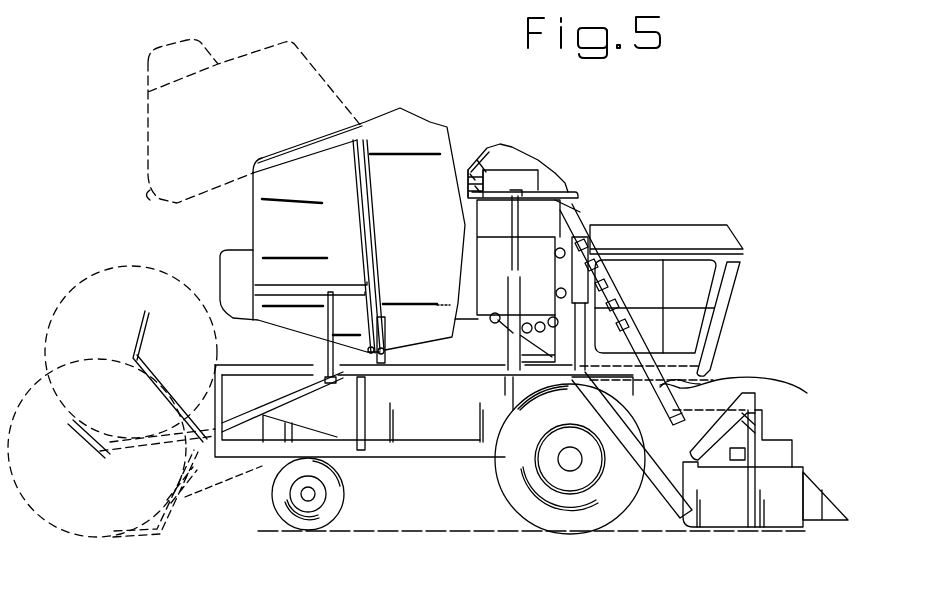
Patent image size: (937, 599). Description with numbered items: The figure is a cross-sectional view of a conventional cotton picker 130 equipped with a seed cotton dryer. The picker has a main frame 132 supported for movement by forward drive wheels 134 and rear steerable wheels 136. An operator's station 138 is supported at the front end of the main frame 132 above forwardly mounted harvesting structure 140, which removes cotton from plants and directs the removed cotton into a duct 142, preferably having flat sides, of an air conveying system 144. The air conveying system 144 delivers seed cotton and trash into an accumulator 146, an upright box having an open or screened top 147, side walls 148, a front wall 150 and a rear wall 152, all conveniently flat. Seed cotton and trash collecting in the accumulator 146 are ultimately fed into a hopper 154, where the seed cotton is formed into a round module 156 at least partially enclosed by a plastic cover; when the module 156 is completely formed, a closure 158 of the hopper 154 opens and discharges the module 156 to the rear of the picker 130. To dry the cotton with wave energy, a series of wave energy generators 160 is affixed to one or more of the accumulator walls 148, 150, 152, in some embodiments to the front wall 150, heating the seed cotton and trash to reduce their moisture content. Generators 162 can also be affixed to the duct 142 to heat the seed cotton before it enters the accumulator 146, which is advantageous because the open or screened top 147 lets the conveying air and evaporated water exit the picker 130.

The cotton picker 130 is at (687, 197).
The main frame 132 is at (713, 370).
The forward drive wheels 134 is at (497, 480).
The rear steerable wheels 136 is at (345, 507).
The operator's station 138 is at (750, 248).
The harvesting structure 140 is at (821, 485).
The duct 142 is at (679, 404).
The air conveying system 144 is at (765, 396).
The accumulator 146 is at (487, 157).
The top 147 is at (528, 150).
The side walls 148 is at (505, 262).
The front wall 150 is at (556, 291).
The rear wall 152 is at (467, 272).
The hopper 154 is at (410, 104).
The round module 156 is at (110, 272).
The closure 158 is at (327, 248).
The wave energy generators 160 is at (555, 255).
The generators 162 is at (577, 212).